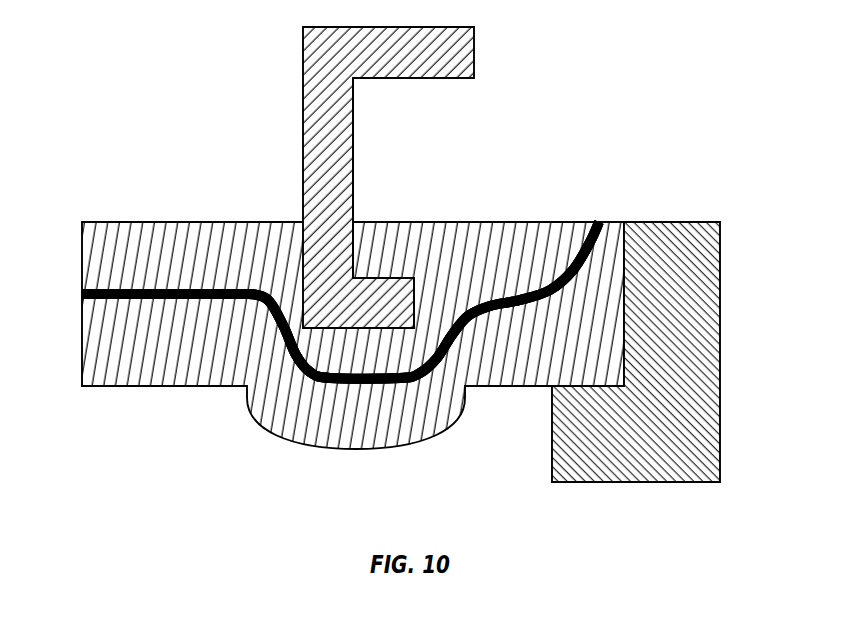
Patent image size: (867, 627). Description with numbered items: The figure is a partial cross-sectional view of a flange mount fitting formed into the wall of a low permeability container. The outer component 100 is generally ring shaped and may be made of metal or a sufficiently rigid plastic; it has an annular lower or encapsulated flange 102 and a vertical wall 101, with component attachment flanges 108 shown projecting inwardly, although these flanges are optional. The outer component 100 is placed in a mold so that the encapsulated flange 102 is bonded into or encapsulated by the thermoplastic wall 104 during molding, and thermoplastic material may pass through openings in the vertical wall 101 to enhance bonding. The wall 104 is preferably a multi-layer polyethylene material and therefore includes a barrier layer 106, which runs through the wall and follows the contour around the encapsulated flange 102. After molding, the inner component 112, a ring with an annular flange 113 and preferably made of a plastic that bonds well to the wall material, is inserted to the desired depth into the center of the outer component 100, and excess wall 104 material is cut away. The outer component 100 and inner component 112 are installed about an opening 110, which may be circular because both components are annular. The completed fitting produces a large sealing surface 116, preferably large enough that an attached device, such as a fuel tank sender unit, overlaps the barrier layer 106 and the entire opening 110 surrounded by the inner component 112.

The outer component 100 is at (288, 122).
The vertical wall 101 is at (354, 142).
The encapsulated flange 102 is at (383, 282).
The wall 104 is at (183, 222).
The barrier layer 106 is at (83, 292).
The component attachment flange 108 is at (413, 78).
The opening 110 is at (769, 262).
The inner component 112 is at (738, 427).
The annular flange 113 is at (628, 483).
The sealing surface 116 is at (538, 222).